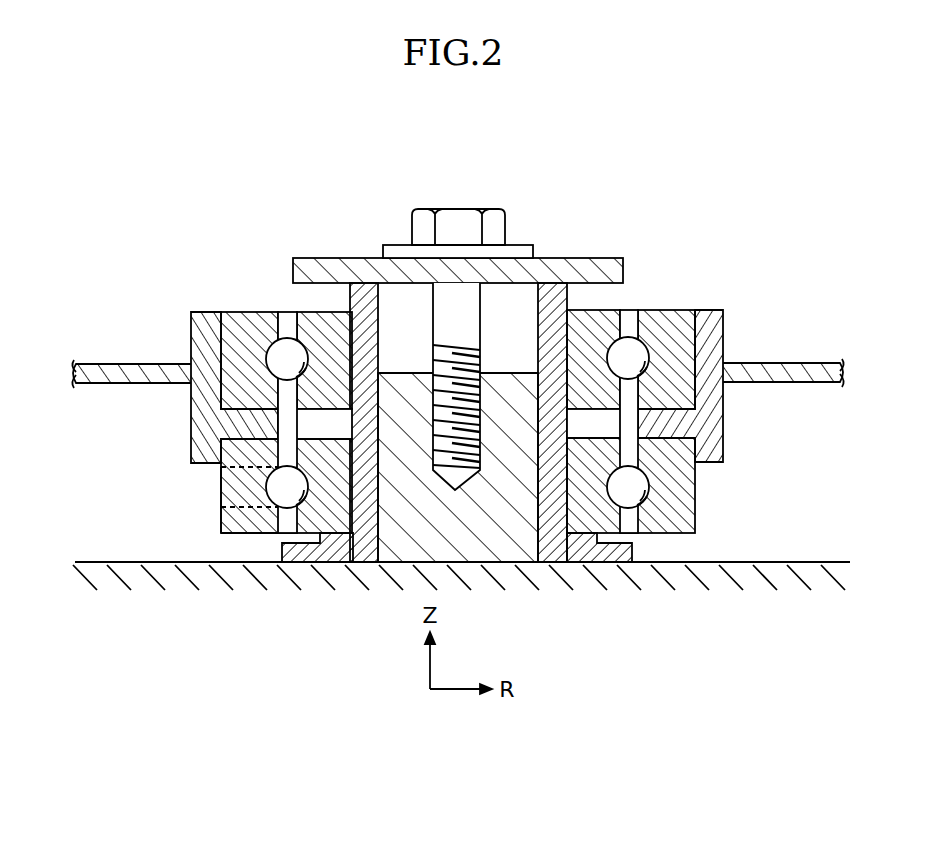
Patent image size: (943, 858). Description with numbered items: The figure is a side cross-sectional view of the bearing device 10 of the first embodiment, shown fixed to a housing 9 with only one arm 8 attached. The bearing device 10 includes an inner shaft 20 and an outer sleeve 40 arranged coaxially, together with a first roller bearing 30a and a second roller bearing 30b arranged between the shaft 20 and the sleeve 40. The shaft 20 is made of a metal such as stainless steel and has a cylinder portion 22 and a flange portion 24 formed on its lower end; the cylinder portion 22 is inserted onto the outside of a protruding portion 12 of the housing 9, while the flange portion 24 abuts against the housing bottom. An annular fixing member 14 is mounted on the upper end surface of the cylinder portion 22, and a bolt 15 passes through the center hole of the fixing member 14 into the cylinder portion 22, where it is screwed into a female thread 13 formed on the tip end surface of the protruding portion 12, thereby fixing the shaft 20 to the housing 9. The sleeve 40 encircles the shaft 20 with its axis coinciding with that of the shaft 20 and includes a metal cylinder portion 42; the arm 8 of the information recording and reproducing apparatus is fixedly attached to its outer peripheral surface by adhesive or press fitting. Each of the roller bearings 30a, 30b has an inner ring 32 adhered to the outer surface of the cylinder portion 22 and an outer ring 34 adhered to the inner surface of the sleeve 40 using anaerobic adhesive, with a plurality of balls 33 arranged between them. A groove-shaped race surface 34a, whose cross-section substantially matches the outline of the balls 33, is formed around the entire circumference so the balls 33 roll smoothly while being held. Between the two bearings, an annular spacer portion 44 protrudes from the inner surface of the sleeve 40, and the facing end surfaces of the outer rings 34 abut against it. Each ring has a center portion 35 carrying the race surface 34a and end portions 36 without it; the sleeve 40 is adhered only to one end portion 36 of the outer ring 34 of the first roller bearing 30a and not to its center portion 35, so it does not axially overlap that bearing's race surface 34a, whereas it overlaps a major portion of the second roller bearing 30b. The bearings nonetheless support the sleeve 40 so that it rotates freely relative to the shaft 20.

The arm 8 is at (814, 364).
The housing 9 is at (832, 562).
The bearing device 10 is at (176, 254).
The protruding portion 12 is at (512, 386).
The female thread 13 is at (468, 378).
The fixing member 14 is at (605, 272).
The bolt 15 is at (505, 226).
The shaft 20 is at (578, 297).
The cylinder portion 22 is at (368, 322).
The flange portion 24 is at (352, 560).
The first roller bearing 30a is at (704, 517).
The second roller bearing 30b is at (680, 303).
The inner ring 32 is at (325, 330).
The balls 33 is at (285, 338).
The outer ring 34 is at (250, 312).
The race surface 34a is at (287, 500).
The center portion 35 is at (240, 489).
The end portions 36 is at (224, 452).
The sleeve 40 is at (726, 300).
The cylinder portion 42 is at (191, 335).
The spacer portion 44 is at (280, 423).